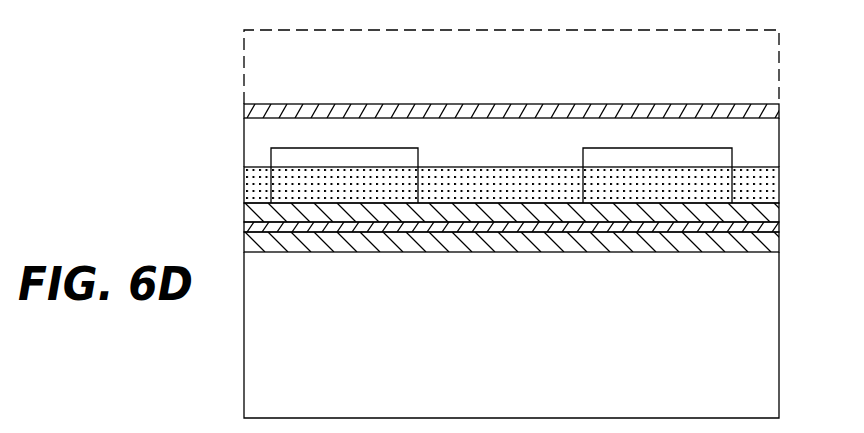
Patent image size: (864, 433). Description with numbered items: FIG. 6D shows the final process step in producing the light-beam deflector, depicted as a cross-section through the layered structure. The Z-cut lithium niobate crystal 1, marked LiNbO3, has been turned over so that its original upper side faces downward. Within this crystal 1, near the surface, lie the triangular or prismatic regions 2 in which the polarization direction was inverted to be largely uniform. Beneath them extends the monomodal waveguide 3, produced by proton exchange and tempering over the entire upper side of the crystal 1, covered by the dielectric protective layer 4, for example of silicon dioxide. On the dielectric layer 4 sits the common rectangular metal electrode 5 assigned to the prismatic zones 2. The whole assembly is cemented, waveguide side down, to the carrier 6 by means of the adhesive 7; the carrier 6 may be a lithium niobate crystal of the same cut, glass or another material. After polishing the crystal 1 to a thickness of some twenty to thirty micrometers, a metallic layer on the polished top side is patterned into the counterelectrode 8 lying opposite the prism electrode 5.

The lithium niobate crystal 1 is at (752, 130).
The triangular region 2 is at (733, 151).
The monomodal waveguide 3 is at (767, 185).
The dielectric protective layer 4 is at (772, 213).
The metal electrode 5 is at (778, 225).
The carrier 6 is at (752, 348).
The adhesive 7 is at (762, 253).
The counterelectrode 8 is at (756, 104).